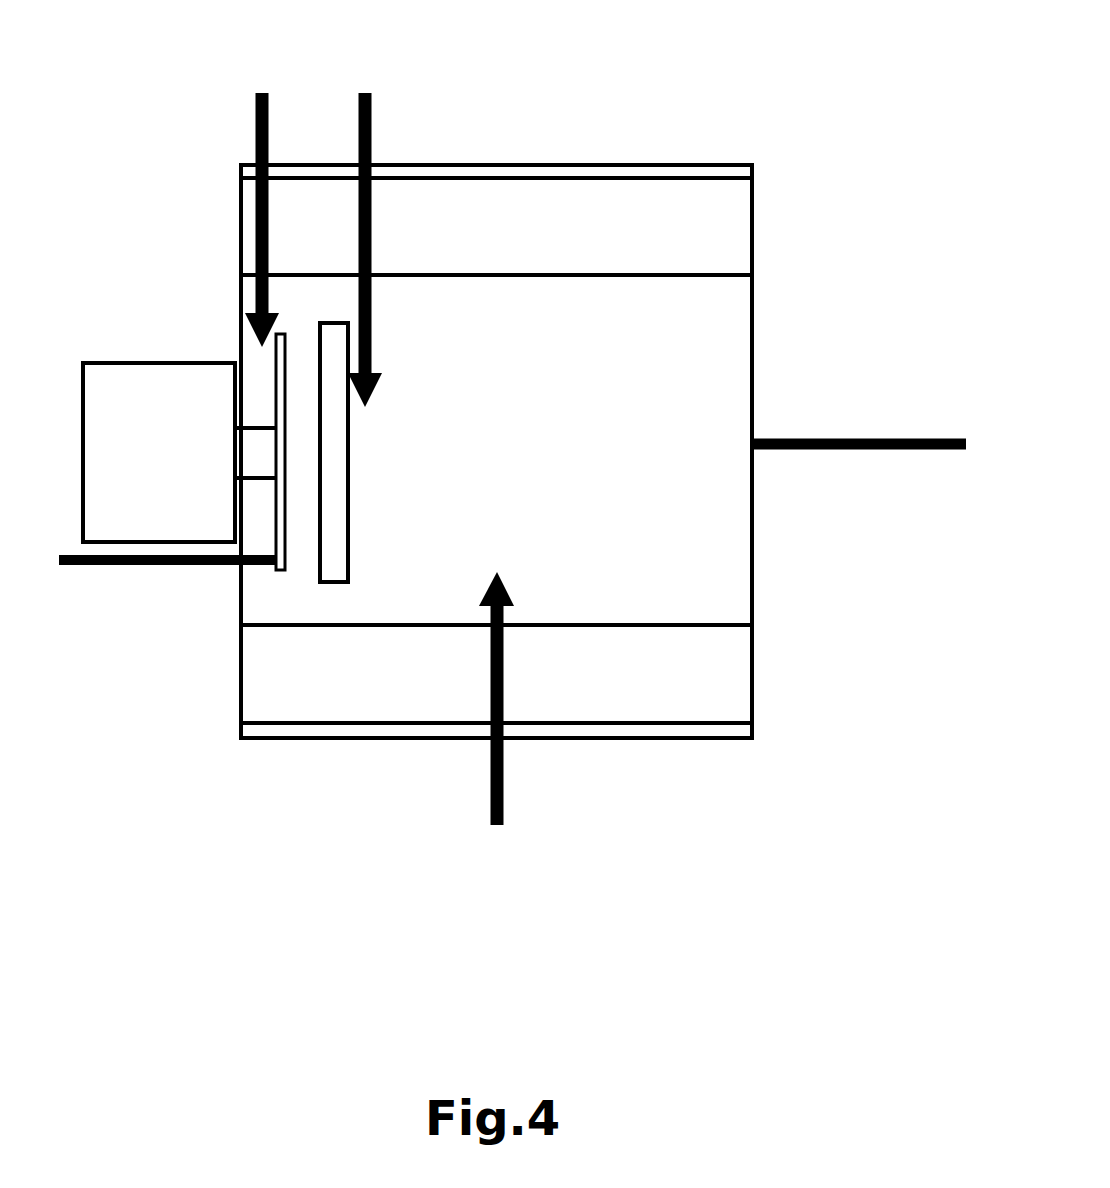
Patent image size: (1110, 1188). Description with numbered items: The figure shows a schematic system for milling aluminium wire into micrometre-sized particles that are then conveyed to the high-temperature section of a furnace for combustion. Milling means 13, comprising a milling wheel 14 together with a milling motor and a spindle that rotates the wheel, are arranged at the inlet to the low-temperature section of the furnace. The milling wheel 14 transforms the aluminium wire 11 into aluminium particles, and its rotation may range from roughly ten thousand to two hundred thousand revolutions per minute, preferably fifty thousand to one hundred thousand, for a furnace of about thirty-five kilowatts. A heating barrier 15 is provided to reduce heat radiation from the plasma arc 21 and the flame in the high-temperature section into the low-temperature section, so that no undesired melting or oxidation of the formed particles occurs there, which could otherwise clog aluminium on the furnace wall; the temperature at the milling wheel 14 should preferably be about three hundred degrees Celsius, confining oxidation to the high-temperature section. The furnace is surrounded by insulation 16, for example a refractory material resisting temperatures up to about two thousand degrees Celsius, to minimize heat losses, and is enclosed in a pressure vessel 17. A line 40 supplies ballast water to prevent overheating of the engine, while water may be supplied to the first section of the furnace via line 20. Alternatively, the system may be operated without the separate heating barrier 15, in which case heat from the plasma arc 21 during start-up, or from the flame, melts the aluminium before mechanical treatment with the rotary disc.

The aluminium wire 11 is at (159, 580).
The milling means 13 is at (137, 343).
The milling wheel 14 is at (279, 577).
The heating barrier 15 is at (332, 588).
The insulation 16 is at (619, 620).
The pressure vessel 17 is at (600, 740).
The line 20 is at (252, 201).
The plasma arc 21 is at (362, 224).
The line for ballast water 40 is at (499, 728).